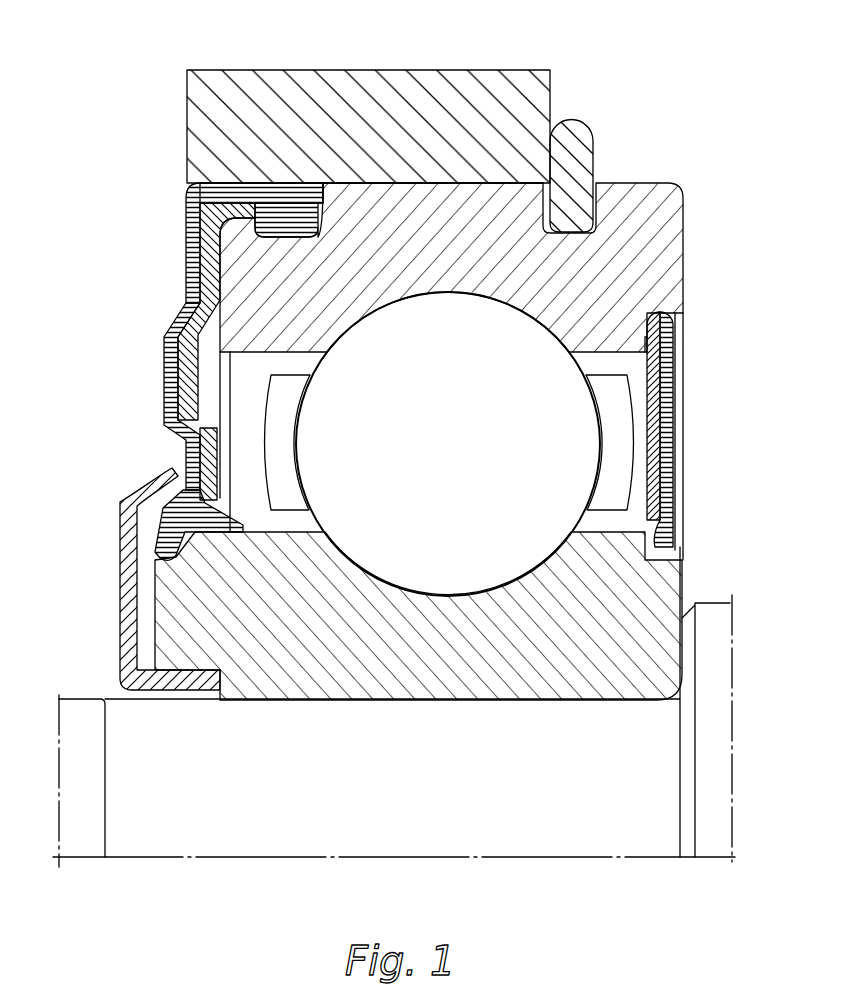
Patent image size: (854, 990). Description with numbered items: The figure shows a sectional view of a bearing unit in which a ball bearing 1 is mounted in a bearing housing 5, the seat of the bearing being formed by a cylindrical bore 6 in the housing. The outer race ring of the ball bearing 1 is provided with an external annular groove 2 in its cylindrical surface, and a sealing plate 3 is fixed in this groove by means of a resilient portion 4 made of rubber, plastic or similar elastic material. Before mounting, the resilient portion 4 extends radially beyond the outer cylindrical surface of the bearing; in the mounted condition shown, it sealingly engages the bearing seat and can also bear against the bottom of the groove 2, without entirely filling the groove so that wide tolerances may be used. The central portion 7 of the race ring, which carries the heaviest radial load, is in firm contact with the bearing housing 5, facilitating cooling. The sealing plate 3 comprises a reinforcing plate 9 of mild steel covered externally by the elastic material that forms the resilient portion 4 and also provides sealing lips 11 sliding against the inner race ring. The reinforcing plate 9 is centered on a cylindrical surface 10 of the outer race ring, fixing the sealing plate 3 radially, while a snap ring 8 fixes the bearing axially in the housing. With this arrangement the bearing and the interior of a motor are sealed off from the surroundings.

The ball bearing 1 is at (632, 203).
The external annular groove 2 is at (193, 300).
The sealing plate 3 is at (167, 372).
The resilient portion 4 is at (267, 182).
The bearing housing 5 is at (213, 120).
The cylindrical bore 6 is at (287, 203).
The central portion of the race ring 7 is at (455, 192).
The snap ring 8 is at (570, 137).
The reinforcing plate 9 is at (190, 430).
The cylindrical surface of the outer race ring 10 is at (200, 257).
The sealing lips 11 is at (232, 522).